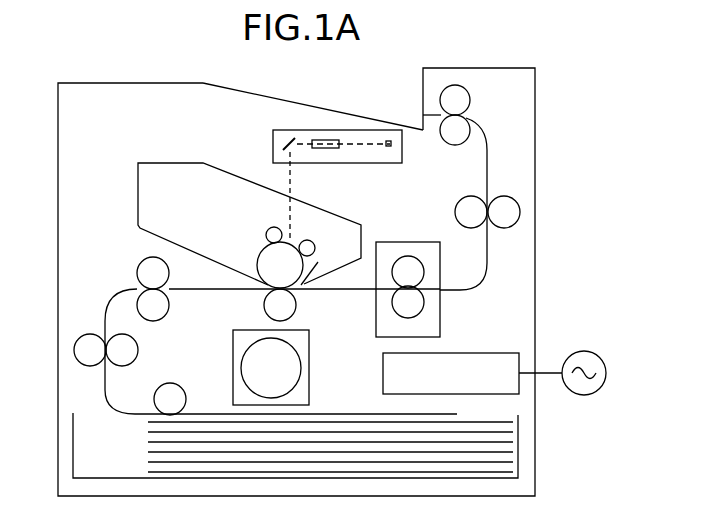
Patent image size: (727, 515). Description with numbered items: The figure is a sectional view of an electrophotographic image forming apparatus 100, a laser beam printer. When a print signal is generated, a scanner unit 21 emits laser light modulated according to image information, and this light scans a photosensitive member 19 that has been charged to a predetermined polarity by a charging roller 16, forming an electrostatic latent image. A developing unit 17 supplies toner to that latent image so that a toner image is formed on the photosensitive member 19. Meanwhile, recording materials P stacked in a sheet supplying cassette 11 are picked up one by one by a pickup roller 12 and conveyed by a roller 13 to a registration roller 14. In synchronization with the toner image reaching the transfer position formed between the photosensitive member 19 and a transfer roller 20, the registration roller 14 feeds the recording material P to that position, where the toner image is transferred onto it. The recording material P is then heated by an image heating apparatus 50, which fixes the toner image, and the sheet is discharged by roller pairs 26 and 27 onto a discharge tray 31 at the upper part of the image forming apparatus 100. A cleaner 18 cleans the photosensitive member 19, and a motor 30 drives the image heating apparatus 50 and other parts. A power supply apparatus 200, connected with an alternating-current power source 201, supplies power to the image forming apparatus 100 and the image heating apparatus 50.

The image forming apparatus 100 is at (536, 138).
The discharge tray 31 is at (370, 128).
The scanner unit 21 is at (272, 147).
The roller pair 27 is at (470, 98).
The roller pair 26 is at (470, 197).
The image heating apparatus 50 is at (404, 242).
The photosensitive member 19 is at (264, 264).
The developing unit 17 is at (268, 229).
The charging roller 16 is at (310, 240).
The cleaner 18 is at (316, 272).
The transfer roller 20 is at (263, 305).
The registration roller 14 is at (138, 268).
The roller 13 is at (90, 333).
The pickup roller 12 is at (170, 383).
The motor 30 is at (311, 374).
The power supply apparatus 200 is at (481, 352).
The alternating-current power source 201 is at (585, 351).
The sheet supplying cassette 11 is at (520, 456).
The recording material P is at (466, 421).